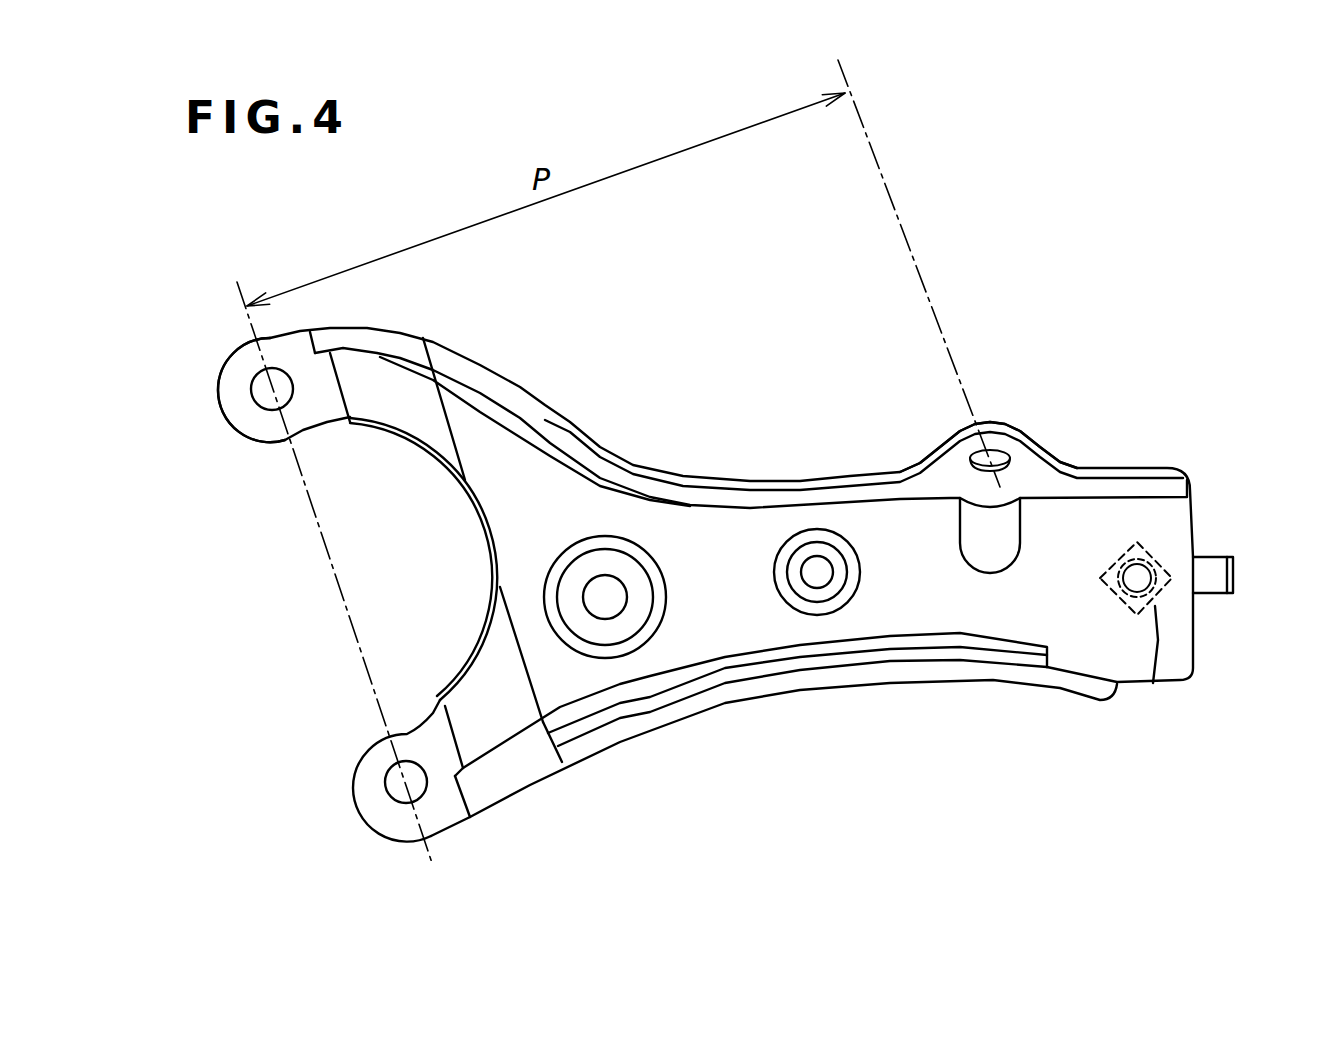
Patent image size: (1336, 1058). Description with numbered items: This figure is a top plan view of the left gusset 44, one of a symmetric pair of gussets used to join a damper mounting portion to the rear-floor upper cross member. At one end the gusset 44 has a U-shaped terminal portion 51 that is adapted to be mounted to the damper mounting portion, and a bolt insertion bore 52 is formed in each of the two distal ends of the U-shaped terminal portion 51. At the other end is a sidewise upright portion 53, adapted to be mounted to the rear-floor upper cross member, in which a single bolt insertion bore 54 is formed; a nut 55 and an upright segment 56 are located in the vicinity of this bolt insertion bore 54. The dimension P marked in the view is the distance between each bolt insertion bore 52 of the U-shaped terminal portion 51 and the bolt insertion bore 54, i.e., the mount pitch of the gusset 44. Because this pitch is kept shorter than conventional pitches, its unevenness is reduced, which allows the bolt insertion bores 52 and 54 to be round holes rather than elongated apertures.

The left gusset 44 is at (1126, 243).
The U-shaped terminal portion 51 is at (238, 346).
The bolt insertion bore 52 is at (263, 407).
The sidewise upright portion 53 is at (956, 433).
The bolt insertion bore 54 is at (1023, 433).
The nut 55 is at (1153, 683).
The upright segment 56 is at (1243, 573).